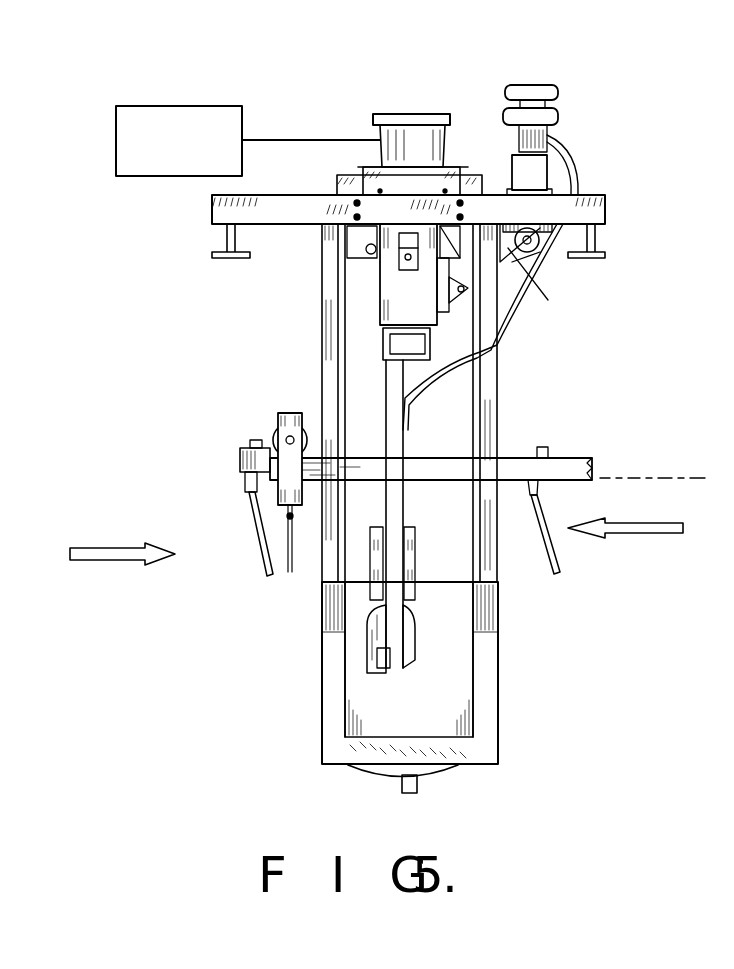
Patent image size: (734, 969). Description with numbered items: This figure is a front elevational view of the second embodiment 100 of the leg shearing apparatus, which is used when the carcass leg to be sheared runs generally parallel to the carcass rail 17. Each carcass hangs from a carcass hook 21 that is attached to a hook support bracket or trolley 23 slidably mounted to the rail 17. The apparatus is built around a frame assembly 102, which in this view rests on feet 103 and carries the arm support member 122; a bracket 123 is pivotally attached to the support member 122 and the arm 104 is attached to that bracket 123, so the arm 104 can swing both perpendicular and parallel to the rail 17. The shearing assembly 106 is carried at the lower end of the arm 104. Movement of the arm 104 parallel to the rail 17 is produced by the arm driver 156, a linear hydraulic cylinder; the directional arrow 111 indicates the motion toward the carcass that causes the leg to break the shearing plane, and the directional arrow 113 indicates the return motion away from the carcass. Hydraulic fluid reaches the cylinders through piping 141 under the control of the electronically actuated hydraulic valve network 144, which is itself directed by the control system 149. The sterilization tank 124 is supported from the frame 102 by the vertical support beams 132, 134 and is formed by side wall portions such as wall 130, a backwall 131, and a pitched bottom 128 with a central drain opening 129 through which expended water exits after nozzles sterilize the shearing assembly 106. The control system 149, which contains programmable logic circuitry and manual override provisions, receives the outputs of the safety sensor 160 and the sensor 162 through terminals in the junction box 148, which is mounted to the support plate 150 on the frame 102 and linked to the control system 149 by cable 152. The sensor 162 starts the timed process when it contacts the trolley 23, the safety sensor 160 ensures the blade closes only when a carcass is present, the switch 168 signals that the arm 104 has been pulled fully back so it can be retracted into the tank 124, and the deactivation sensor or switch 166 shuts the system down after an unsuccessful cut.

The carcass rail 17 is at (572, 458).
The carcass hook 21 is at (289, 573).
The hook support bracket or trolley 23 is at (278, 418).
The second embodiment of the shearing apparatus 100 is at (584, 114).
The frame assembly 102 is at (607, 210).
The mounting feet 103 is at (225, 246).
The arm 104 is at (404, 415).
The shearing assembly 106 is at (410, 640).
The directional arrow 111 is at (645, 534).
The directional arrow 113 is at (113, 561).
The arm support member 122 is at (393, 233).
The bracket 123 is at (385, 323).
The sterilization chamber or tank 124 is at (492, 712).
The bottom 128 is at (358, 768).
The drain opening 129 is at (420, 786).
The upstanding side wall portion 130 is at (327, 685).
The backwall 131 is at (490, 673).
The vertical support beam 132 is at (495, 380).
The vertical support beam 134 is at (328, 262).
The piping 141 is at (555, 263).
The hydraulic valve network 144 is at (540, 83).
The junction box 148 is at (393, 115).
The control system 149 is at (156, 154).
The support plate 150 is at (458, 167).
The cable 152 is at (285, 140).
The arm driver 156 is at (528, 280).
The safety sensor 160 is at (560, 553).
The sensor 162 is at (255, 535).
The deactivation sensor or switch 166 is at (373, 256).
The switch 168 is at (402, 275).